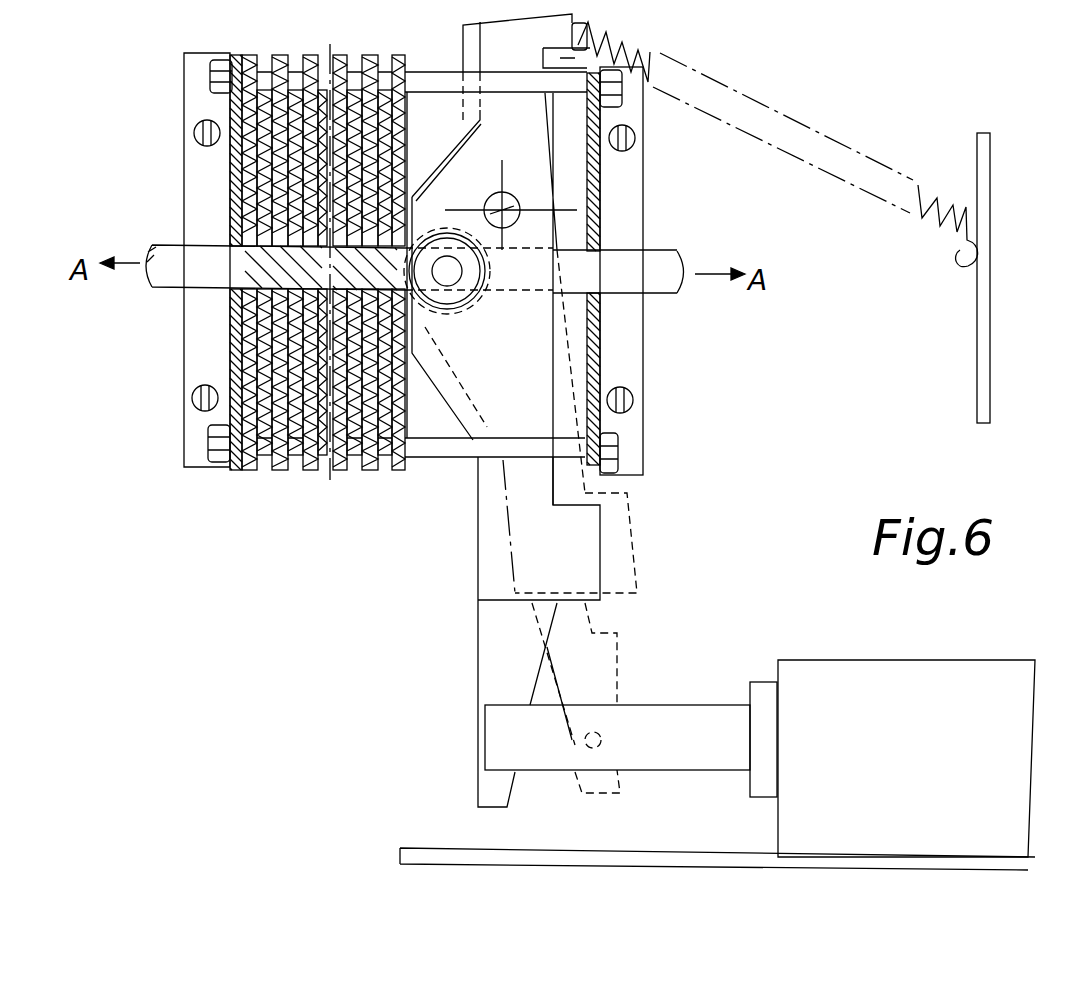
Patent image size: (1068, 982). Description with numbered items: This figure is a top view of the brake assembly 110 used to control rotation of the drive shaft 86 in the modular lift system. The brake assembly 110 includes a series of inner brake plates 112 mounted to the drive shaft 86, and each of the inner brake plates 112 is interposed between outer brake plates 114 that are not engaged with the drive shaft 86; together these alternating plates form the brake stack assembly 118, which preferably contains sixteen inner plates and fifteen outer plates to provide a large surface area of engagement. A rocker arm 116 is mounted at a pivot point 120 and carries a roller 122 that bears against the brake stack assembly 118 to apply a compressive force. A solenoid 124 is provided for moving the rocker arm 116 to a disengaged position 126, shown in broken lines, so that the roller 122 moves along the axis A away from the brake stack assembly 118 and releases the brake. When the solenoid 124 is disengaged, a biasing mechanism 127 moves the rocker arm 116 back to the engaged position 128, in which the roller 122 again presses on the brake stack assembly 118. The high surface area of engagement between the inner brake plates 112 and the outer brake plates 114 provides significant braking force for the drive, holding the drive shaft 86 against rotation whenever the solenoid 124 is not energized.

The drive shaft 86 is at (663, 251).
The brake assembly 110 is at (317, 559).
The inner brake plates 112 is at (298, 143).
The outer brake plates 114 is at (298, 472).
The rocker arm 116 is at (510, 40).
The brake stack assembly 118 is at (226, 343).
The pivot point 120 is at (500, 205).
The roller 122 is at (448, 300).
The solenoid 124 is at (717, 765).
The disengaged position 126 is at (620, 560).
The biasing mechanism 127 is at (778, 120).
The engaged position 128 is at (490, 568).